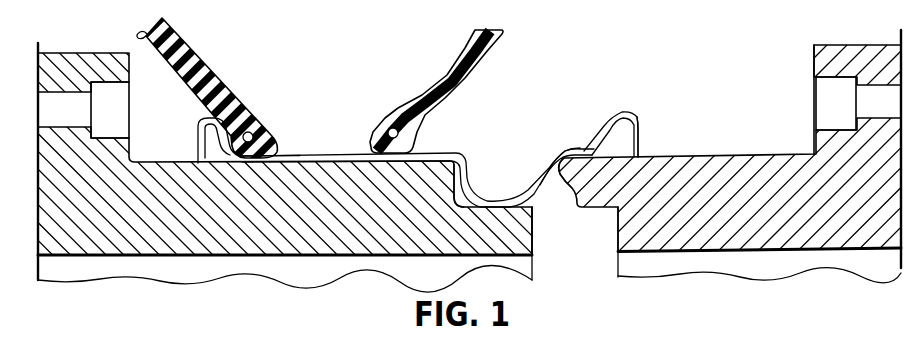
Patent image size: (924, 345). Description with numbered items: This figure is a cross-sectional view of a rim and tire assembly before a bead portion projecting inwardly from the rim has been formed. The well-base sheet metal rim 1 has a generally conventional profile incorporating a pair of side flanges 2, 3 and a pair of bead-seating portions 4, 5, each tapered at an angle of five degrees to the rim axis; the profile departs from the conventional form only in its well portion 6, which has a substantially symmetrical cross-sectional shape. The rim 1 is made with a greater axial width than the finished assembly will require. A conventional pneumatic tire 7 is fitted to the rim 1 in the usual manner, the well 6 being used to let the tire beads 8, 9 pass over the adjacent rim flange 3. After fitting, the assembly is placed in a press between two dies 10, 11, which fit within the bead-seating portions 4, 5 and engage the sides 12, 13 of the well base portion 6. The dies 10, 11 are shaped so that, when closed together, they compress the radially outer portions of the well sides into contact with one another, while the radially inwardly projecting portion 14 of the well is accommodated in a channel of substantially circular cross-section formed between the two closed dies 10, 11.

The well-base sheet metal rim 1 is at (460, 150).
The side flange 2 is at (203, 123).
The side flange 3 is at (629, 113).
The bead-seating portion 4 is at (233, 156).
The bead-seating portion 5 is at (585, 150).
The well portion 6 is at (553, 188).
The pneumatic tire 7 is at (179, 49).
The tire bead 8 is at (262, 129).
The tire bead 9 is at (387, 125).
The die 10 is at (257, 243).
The die 11 is at (727, 237).
The side of well base portion 12 is at (466, 163).
The side of well base portion 13 is at (552, 167).
The radially inwardly projecting portion 14 is at (535, 201).